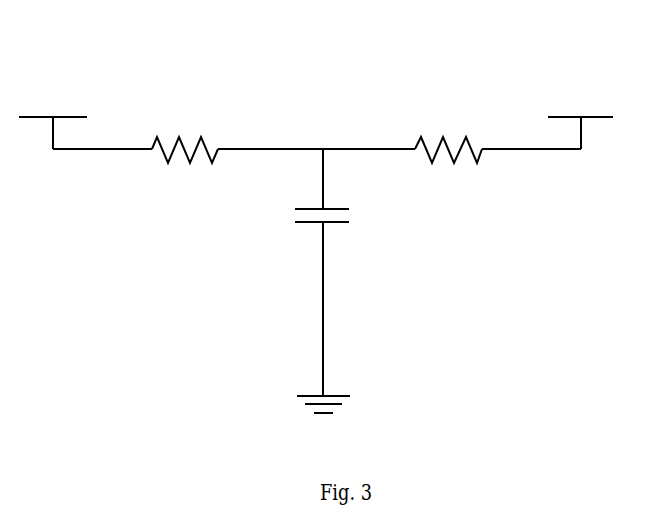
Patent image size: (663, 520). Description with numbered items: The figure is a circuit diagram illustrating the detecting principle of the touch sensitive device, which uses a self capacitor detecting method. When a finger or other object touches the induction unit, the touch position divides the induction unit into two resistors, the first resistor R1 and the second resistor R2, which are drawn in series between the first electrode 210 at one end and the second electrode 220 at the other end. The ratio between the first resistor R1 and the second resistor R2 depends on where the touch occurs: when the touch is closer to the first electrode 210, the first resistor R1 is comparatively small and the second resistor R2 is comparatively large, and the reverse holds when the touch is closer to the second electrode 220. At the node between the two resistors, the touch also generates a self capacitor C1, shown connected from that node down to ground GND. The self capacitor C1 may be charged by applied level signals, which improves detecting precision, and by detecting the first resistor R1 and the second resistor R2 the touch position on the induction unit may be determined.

The first electrode 210 is at (67, 117).
The second electrode 220 is at (600, 117).
The first resistor R1 is at (185, 168).
The second resistor R2 is at (448, 168).
The self capacitor C1 is at (343, 272).
The ground GND is at (358, 372).